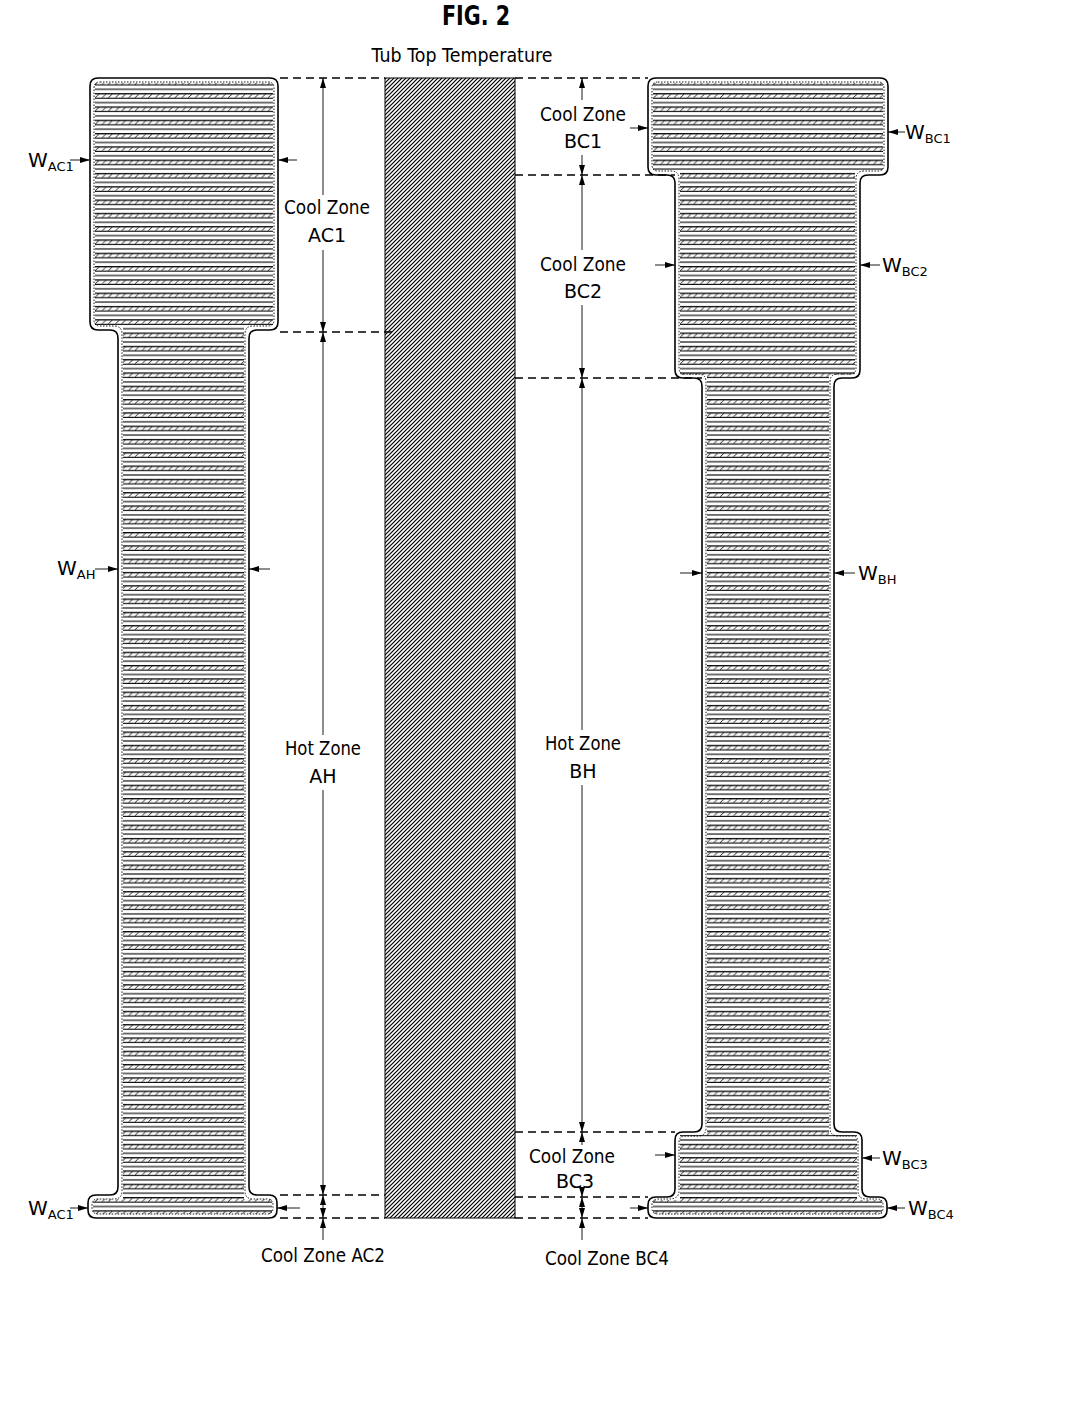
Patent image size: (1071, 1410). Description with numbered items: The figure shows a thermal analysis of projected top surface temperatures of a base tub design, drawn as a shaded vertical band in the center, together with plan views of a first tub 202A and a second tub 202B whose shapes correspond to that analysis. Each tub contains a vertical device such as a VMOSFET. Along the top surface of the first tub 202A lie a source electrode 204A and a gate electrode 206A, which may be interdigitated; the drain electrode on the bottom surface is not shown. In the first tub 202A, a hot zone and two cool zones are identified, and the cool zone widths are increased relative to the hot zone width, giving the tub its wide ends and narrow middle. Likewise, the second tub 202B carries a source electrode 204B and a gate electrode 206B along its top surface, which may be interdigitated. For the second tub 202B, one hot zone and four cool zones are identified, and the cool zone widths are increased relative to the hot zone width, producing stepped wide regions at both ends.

The first tub 202A is at (118, 392).
The source electrode 204A is at (130, 543).
The gate electrode 206A is at (238, 410).
The second tub 202B is at (860, 355).
The source electrode 204B is at (712, 462).
The gate electrode 206B is at (828, 440).